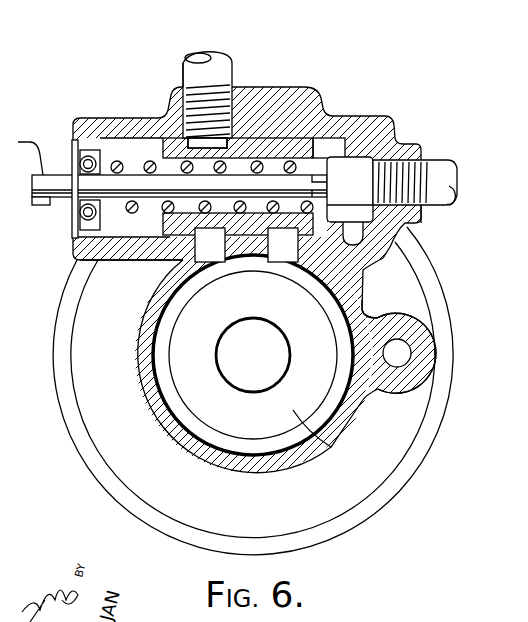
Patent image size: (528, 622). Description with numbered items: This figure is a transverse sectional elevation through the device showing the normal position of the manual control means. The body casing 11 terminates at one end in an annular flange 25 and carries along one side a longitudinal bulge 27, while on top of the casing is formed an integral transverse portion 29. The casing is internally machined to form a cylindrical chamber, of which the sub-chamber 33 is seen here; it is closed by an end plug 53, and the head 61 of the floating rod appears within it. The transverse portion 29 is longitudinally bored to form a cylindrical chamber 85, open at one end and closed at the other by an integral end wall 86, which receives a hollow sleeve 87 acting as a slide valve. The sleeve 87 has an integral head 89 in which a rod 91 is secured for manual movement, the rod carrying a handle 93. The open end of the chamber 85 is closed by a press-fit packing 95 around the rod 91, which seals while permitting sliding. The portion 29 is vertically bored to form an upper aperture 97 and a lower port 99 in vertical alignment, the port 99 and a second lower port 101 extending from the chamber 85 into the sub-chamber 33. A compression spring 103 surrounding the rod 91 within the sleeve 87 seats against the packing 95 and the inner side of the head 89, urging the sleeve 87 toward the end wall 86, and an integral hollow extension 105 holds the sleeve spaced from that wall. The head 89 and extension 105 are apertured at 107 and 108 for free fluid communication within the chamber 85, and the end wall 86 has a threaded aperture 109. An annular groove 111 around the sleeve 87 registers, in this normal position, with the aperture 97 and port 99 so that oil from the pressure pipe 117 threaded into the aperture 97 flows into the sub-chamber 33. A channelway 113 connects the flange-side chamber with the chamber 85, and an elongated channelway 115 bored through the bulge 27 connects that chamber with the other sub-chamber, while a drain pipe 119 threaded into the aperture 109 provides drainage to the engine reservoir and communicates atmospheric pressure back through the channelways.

The body casing 11 is at (139, 351).
The annular flange 25 is at (432, 285).
The longitudinal bulge 27 is at (429, 350).
The transverse portion 29 is at (311, 88).
The sub-chamber 33 is at (331, 447).
The end plug 53 is at (337, 363).
The head 61 is at (253, 384).
The cylindrical chamber 85 is at (143, 147).
The end wall 86 is at (412, 157).
The hollow sleeve 87 is at (157, 237).
The head 89 is at (322, 169).
The rod 91 is at (62, 198).
The handle 93 is at (26, 138).
The packing 95 is at (73, 153).
The upper aperture 97 is at (180, 77).
The lower port 99 is at (213, 262).
The second lower port 101 is at (284, 253).
The compression spring 103 is at (124, 207).
The hollow extension 105 is at (335, 222).
The aperture 107 is at (300, 165).
The aperture 108 is at (351, 156).
The aperture 109 is at (434, 216).
The annular groove 111 is at (188, 142).
The channelway 113 is at (360, 250).
The elongated channelway 115 is at (399, 362).
The pressure pipe 117 is at (218, 68).
The drain pipe 119 is at (444, 177).